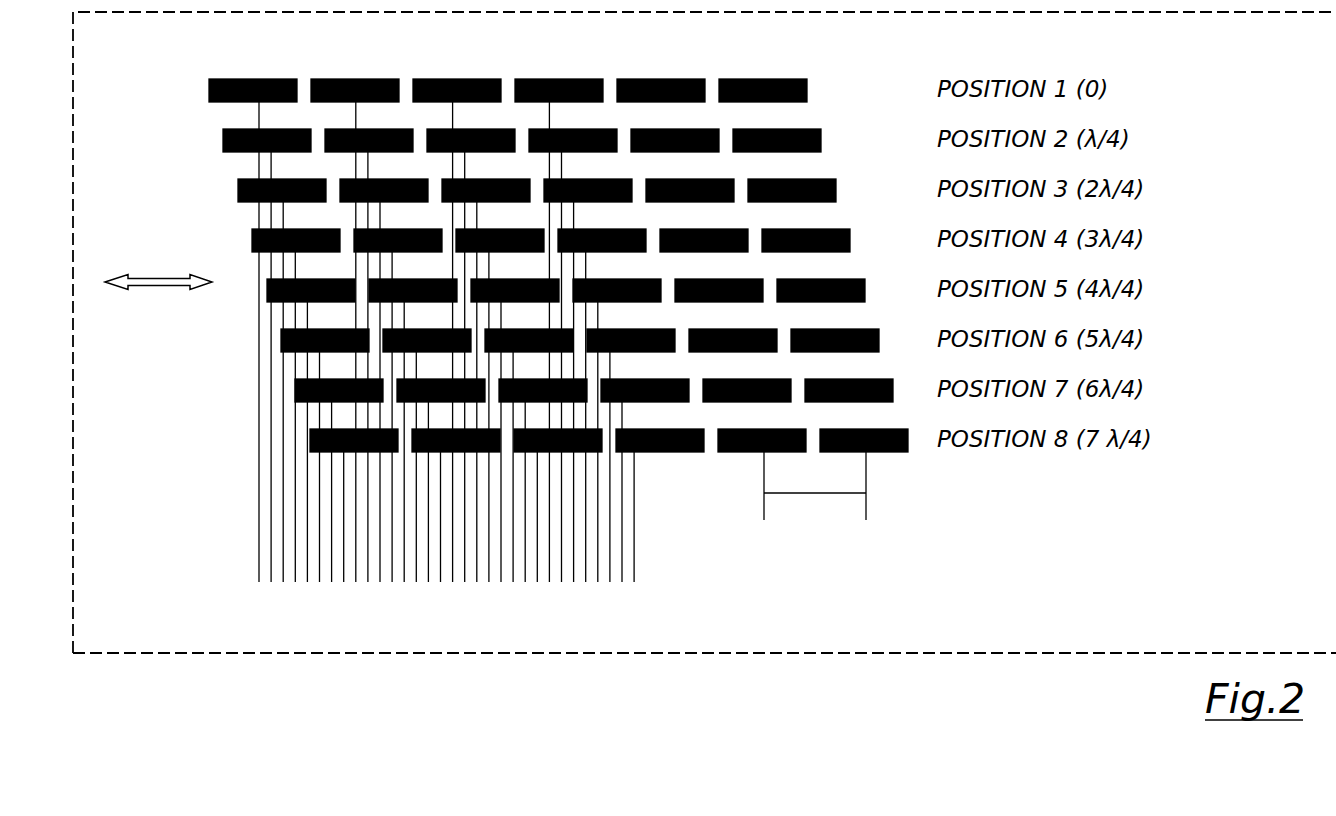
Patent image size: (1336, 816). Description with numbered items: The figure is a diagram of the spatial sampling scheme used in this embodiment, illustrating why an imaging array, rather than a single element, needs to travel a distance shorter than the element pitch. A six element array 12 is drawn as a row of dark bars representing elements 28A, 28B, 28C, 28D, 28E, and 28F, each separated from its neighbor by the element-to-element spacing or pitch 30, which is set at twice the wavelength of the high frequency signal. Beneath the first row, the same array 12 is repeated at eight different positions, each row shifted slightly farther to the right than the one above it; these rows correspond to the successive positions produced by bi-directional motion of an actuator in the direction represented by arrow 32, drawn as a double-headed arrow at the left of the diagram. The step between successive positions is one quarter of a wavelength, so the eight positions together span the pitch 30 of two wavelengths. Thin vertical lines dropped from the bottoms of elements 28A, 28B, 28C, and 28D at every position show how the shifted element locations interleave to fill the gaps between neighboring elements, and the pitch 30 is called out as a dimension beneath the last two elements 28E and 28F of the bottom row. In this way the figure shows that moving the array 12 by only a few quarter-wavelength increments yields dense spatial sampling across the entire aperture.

The six element array 12 is at (197, 75).
The element 28A is at (228, 80).
The element 28B is at (330, 80).
The element 28C is at (432, 80).
The element 28D is at (534, 80).
The element 28E is at (636, 80).
The element 28F is at (739, 80).
The element-to-element spacing (pitch) 30 is at (866, 537).
The arrow 32 is at (147, 277).